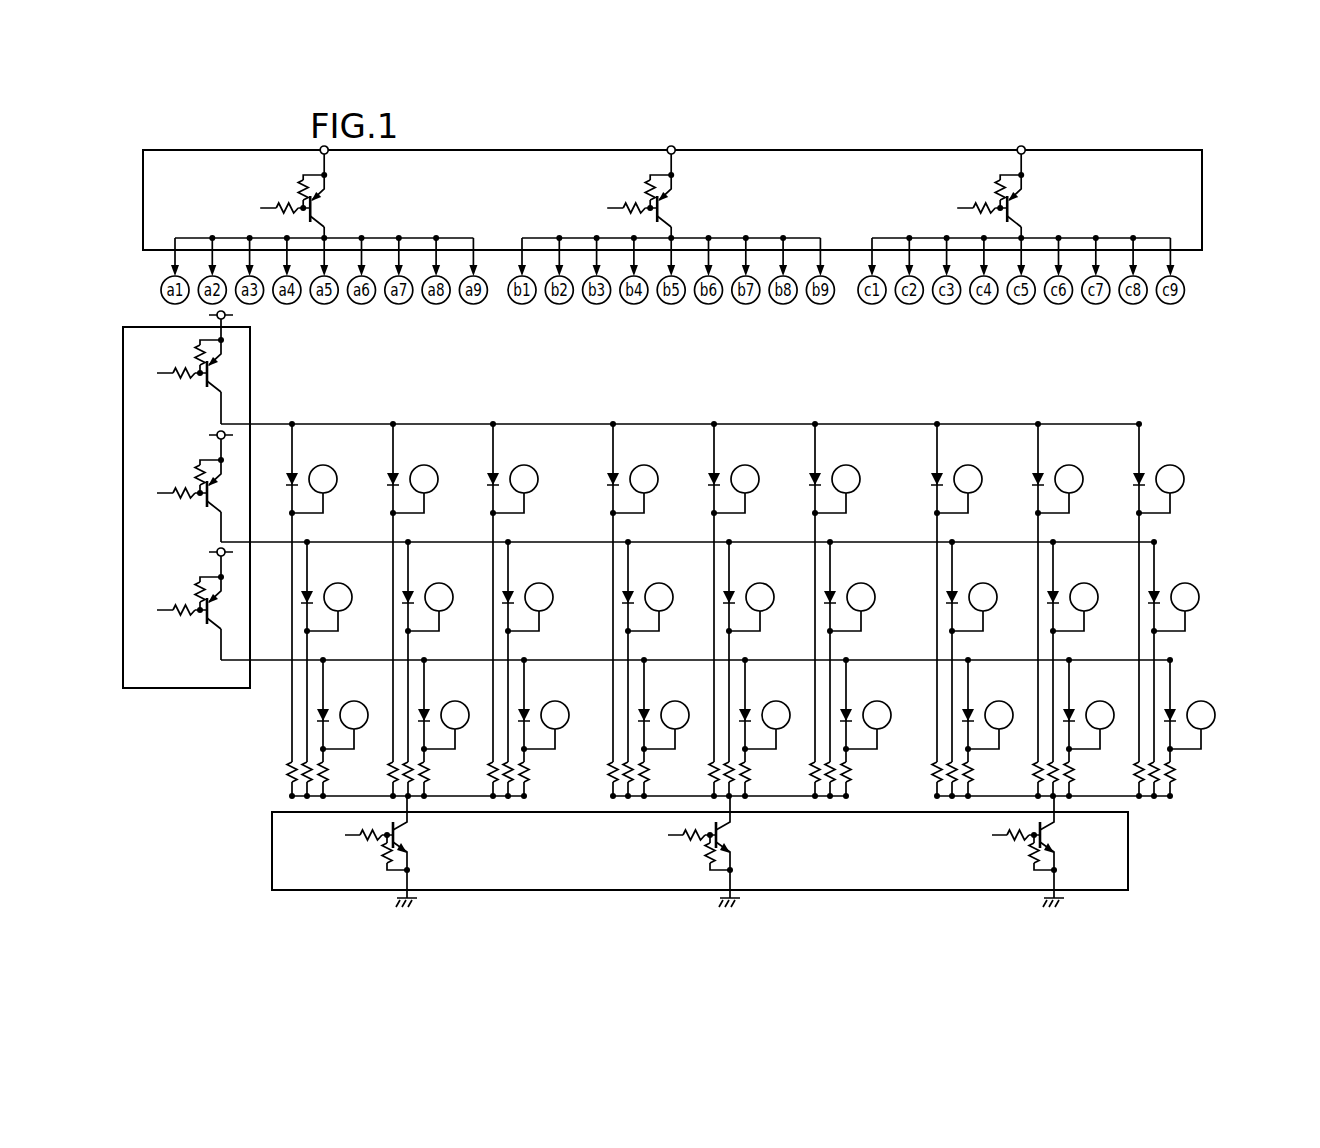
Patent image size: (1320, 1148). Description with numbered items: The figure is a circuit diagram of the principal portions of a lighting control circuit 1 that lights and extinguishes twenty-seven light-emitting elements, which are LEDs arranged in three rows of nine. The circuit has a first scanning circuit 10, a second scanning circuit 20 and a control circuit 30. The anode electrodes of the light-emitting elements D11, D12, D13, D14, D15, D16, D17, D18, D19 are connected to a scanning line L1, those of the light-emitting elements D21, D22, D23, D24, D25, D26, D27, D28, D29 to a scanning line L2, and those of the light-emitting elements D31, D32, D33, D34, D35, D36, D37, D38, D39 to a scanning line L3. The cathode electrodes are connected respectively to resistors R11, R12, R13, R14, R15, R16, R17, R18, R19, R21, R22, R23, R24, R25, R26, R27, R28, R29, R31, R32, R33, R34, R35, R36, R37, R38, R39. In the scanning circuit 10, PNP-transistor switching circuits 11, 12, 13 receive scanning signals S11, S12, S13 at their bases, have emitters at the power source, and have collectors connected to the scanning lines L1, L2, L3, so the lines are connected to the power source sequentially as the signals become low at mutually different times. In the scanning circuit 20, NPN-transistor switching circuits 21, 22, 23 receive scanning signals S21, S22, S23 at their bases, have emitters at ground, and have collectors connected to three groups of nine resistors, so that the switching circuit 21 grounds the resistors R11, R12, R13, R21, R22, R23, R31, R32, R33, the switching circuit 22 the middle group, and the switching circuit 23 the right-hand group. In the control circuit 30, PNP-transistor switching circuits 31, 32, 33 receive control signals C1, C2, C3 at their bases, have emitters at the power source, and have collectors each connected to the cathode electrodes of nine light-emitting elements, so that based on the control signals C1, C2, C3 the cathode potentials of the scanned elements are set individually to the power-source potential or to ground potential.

The lighting control circuit 1 is at (1265, 245).
The scanning circuit 10 is at (183, 688).
The switching circuit 11 is at (195, 378).
The switching circuit 12 is at (195, 498).
The switching circuit 13 is at (195, 615).
The scanning circuit 20 is at (1130, 862).
The switching circuit 21 is at (407, 851).
The switching circuit 22 is at (730, 851).
The switching circuit 23 is at (1054, 851).
The control circuit 30 is at (812, 150).
The switching circuit 31 is at (324, 192).
The switching circuit 32 is at (671, 192).
The switching circuit 33 is at (1021, 192).
The control signal C1 is at (232, 184).
The control signal C2 is at (579, 184).
The control signal C3 is at (929, 184).
The scanning signal S11 is at (154, 408).
The scanning signal S12 is at (154, 528).
The scanning signal S13 is at (154, 645).
The scanning signal S21 is at (313, 862).
The scanning signal S22 is at (636, 862).
The scanning signal S23 is at (960, 862).
The scanning line L1 is at (276, 423).
The scanning line L2 is at (272, 542).
The scanning line L3 is at (272, 660).
The light-emitting element D11 is at (295, 476).
The light-emitting element D12 is at (396, 476).
The light-emitting element D13 is at (496, 476).
The light-emitting element D14 is at (616, 476).
The light-emitting element D15 is at (717, 476).
The light-emitting element D16 is at (818, 476).
The light-emitting element D17 is at (940, 476).
The light-emitting element D18 is at (1041, 476).
The light-emitting element D19 is at (1142, 476).
The light-emitting element D21 is at (310, 594).
The light-emitting element D22 is at (411, 594).
The light-emitting element D23 is at (511, 594).
The light-emitting element D24 is at (631, 594).
The light-emitting element D25 is at (732, 594).
The light-emitting element D26 is at (833, 594).
The light-emitting element D27 is at (955, 594).
The light-emitting element D28 is at (1056, 594).
The light-emitting element D29 is at (1157, 594).
The light-emitting element D31 is at (326, 712).
The light-emitting element D32 is at (427, 712).
The light-emitting element D33 is at (527, 712).
The light-emitting element D34 is at (647, 712).
The light-emitting element D35 is at (748, 712).
The light-emitting element D36 is at (849, 712).
The light-emitting element D37 is at (971, 712).
The light-emitting element D38 is at (1072, 712).
The light-emitting element D39 is at (1173, 712).
The resistor R11 is at (290, 762).
The resistor R12 is at (391, 763).
The resistor R13 is at (491, 763).
The resistor R14 is at (613, 762).
The resistor R15 is at (713, 763).
The resistor R16 is at (814, 763).
The resistor R17 is at (937, 786).
The resistor R18 is at (1037, 765).
The resistor R19 is at (1139, 786).
The resistor R21 is at (306, 784).
The resistor R22 is at (407, 786).
The resistor R23 is at (508, 786).
The resistor R24 is at (628, 785).
The resistor R25 is at (729, 786).
The resistor R26 is at (830, 786).
The resistor R27 is at (951, 762).
The resistor R28 is at (1053, 786).
The resistor R29 is at (1154, 786).
The resistor R31 is at (323, 784).
The resistor R32 is at (423, 786).
The resistor R33 is at (524, 786).
The resistor R34 is at (644, 786).
The resistor R35 is at (745, 786).
The resistor R36 is at (846, 786).
The resistor R37 is at (968, 762).
The resistor R38 is at (1069, 762).
The resistor R39 is at (1170, 765).